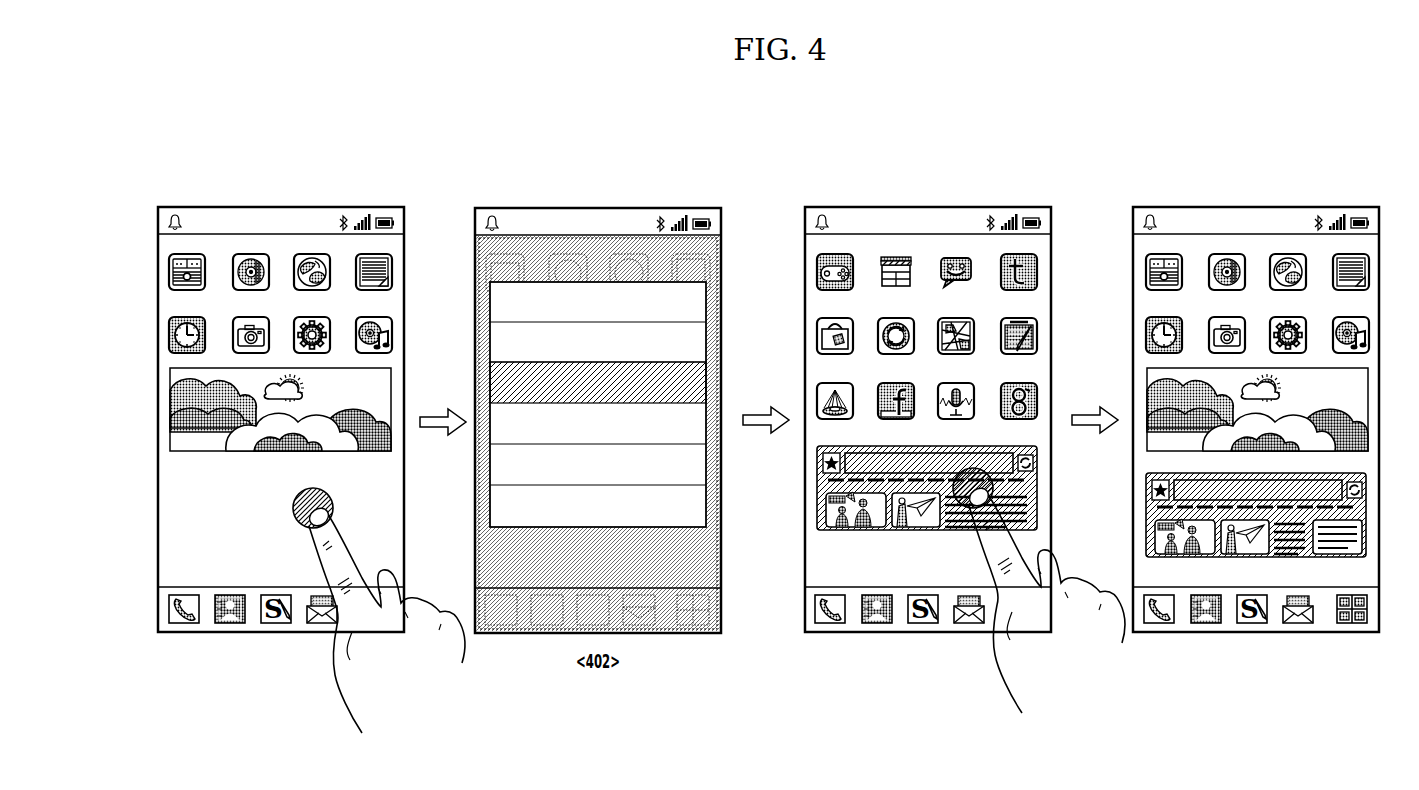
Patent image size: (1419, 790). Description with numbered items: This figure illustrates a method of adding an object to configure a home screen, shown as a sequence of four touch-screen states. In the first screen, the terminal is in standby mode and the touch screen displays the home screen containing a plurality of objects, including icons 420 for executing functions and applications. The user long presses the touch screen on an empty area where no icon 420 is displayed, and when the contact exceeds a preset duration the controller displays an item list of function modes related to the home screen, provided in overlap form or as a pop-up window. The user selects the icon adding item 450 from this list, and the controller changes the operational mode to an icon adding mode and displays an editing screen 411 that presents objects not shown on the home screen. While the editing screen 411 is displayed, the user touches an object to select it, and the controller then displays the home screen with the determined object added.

The editing screen 411 is at (805, 208).
The icon 420 is at (175, 263).
The icon adding item 450 is at (706, 381).